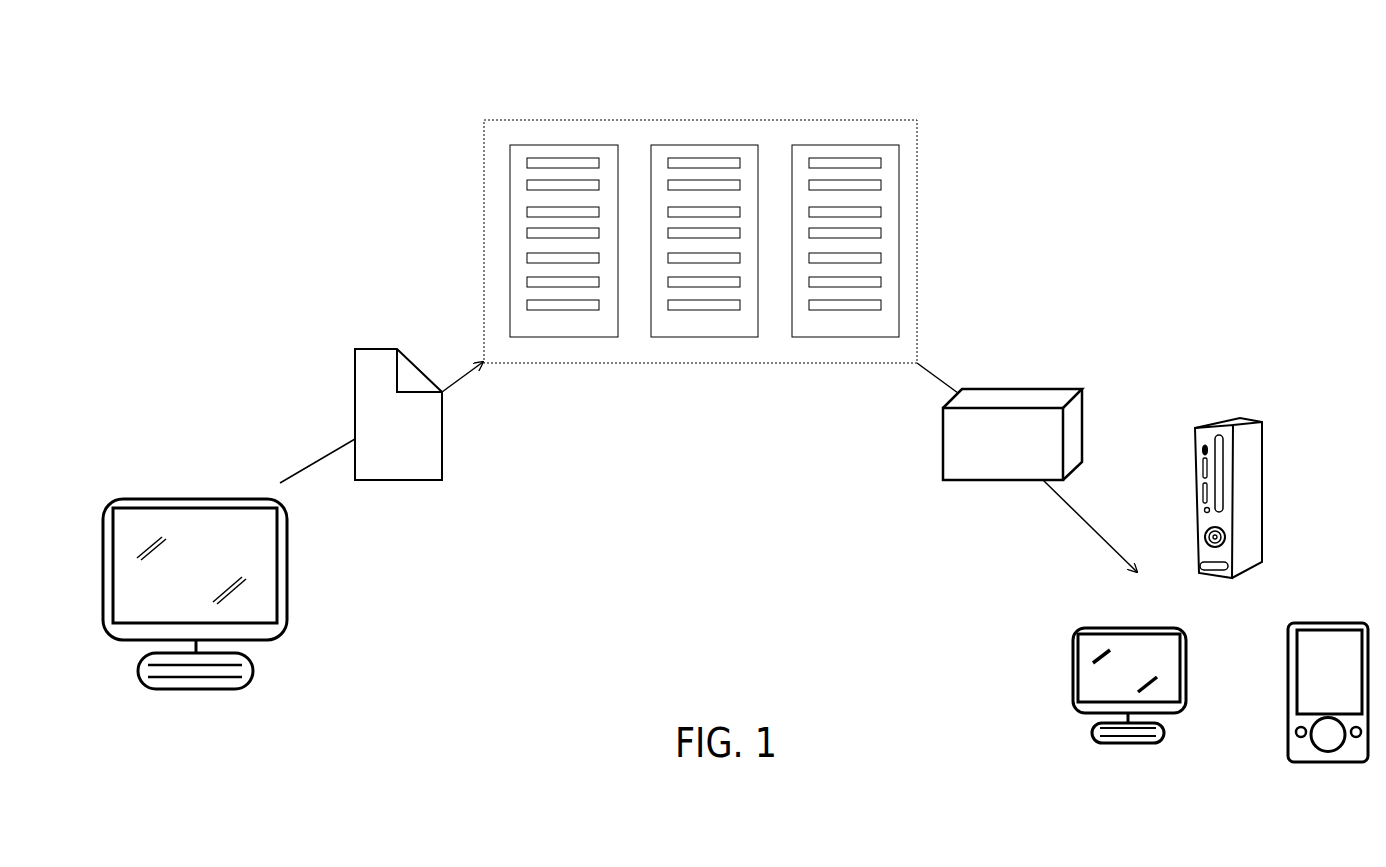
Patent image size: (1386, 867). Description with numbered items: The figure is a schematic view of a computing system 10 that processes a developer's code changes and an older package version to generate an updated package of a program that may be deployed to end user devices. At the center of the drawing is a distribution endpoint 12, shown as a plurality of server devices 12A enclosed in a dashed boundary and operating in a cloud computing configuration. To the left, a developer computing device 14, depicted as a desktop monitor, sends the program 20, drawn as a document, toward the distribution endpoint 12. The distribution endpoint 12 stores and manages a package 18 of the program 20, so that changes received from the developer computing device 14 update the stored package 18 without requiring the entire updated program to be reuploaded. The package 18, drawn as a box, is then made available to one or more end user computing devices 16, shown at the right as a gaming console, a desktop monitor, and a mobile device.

The computing system 10 is at (1117, 38).
The distribution endpoint 12 is at (788, 120).
The server devices 12A is at (895, 155).
The developer computing device 14 is at (143, 499).
The end user computing devices 16 is at (1300, 564).
The package 18 is at (1048, 393).
The program 20 is at (363, 349).